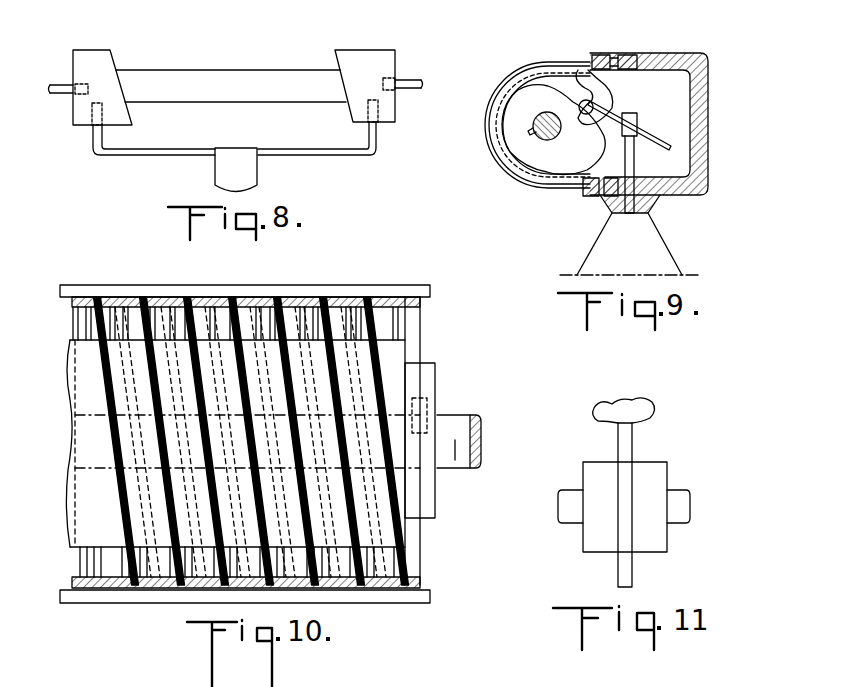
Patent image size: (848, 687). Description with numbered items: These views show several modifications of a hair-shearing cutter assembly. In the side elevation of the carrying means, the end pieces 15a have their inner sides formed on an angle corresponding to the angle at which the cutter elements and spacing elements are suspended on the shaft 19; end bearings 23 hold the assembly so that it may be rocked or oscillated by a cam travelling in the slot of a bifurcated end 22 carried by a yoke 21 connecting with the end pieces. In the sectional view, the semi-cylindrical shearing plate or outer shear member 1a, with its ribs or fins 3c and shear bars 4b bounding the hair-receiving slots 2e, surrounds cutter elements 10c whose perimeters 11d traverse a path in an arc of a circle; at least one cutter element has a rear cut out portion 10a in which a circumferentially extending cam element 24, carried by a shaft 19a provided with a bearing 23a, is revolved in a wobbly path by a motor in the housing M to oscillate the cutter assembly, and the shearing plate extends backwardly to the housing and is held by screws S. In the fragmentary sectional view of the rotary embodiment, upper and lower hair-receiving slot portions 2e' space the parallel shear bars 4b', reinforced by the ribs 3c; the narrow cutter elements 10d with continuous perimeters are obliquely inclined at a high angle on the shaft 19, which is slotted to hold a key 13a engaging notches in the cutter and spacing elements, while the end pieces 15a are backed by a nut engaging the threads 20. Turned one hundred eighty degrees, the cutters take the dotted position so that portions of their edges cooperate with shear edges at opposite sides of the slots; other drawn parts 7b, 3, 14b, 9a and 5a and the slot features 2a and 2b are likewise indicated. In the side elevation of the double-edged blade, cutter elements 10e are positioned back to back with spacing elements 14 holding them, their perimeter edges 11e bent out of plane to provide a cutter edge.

In FIG. 8, the end pieces 15a is at (82, 60).
In FIG. 10, the end pieces 15a is at (427, 433).
In FIG. 8, the shaft 19 is at (213, 82).
In FIG. 10, the shaft 19 is at (458, 433).
In FIG. 11, the shaft 19 is at (572, 510).
In FIG. 8, the end bearings 23 is at (62, 89).
In FIG. 8, the yoke 21 is at (132, 158).
In FIG. 8, the bifurcated end 22 is at (225, 170).
In FIG. 9, the outer shear member 1a is at (530, 63).
In FIG. 9, the ribs 3c is at (497, 92).
In FIG. 10, the ribs 3c is at (298, 285).
In FIG. 9, the shear bars 4b is at (515, 125).
In FIG. 9, the cutter elements 10c is at (494, 116).
In FIG. 9, the perimeters 11d is at (496, 146).
In FIG. 9, the slots 2e is at (474, 179).
In FIG. 9, the cut out portions 10a is at (580, 70).
In FIG. 9, the screws S is at (612, 55).
In FIG. 9, the cam element 24 is at (655, 138).
In FIG. 9, the bearing 23a is at (650, 200).
In FIG. 9, the shaft 19a is at (628, 205).
In FIG. 9, the housing M is at (648, 245).
In FIG. 10, the hair-receiving slot portions 2e' is at (245, 438).
In FIG. 10, the shear bars 4b' is at (237, 440).
In FIG. 10, the slanted slats 7b is at (398, 285).
In FIG. 10, the end plate 3 is at (418, 310).
In FIG. 10, the spacing elements 14 is at (358, 360).
In FIG. 11, the spacing elements 14 is at (603, 475).
In FIG. 10, the drum surface 14b is at (212, 382).
In FIG. 10, the cutter elements 10d is at (262, 498).
In FIG. 10, the key 13a is at (424, 400).
In FIG. 10, the threads 20 is at (457, 463).
In FIG. 10, the bottom slat 9a is at (340, 590).
In FIG. 10, the bottom pin 5a is at (385, 590).
In FIG. 10, the enlarged slot end portions 2a is at (140, 678).
In FIG. 10, the diverging ends 2b is at (350, 677).
In FIG. 11, the perimeter edges 11e is at (607, 406).
In FIG. 11, the cutter elements 10e is at (620, 440).